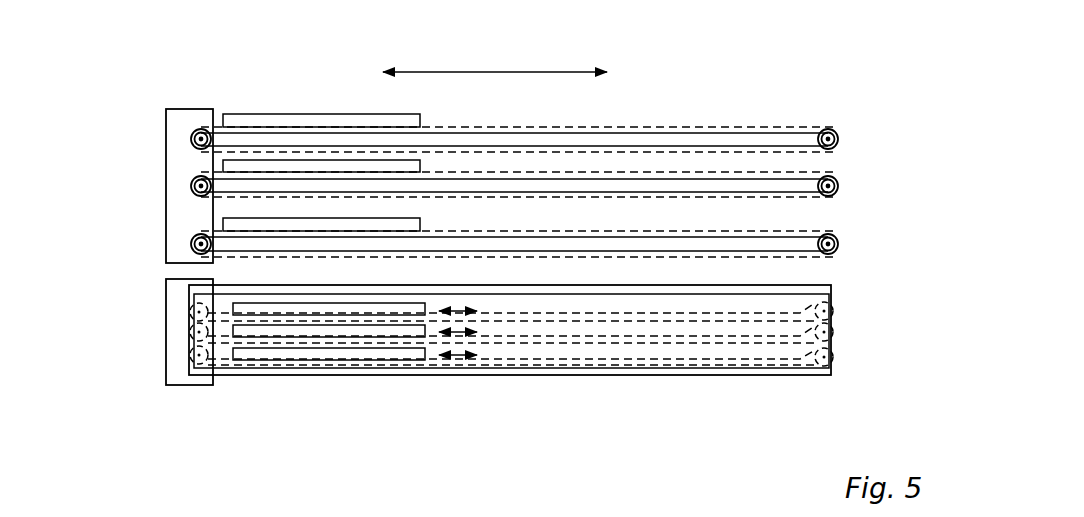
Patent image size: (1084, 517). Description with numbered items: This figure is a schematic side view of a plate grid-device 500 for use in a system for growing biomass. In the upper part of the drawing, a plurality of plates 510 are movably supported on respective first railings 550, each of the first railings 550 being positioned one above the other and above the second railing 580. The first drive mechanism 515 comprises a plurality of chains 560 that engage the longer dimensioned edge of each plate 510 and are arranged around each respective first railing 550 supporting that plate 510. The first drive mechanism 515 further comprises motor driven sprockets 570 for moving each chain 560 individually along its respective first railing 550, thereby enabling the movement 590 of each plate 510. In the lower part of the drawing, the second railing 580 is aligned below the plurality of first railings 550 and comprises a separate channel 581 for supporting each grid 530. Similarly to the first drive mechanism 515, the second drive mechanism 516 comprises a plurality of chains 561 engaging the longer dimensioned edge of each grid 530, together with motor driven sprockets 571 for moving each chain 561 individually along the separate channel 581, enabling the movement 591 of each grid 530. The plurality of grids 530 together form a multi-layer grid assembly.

The plate grid-device 500 is at (182, 83).
The plates 510 is at (303, 222).
The first drive mechanism 515 is at (165, 133).
The second drive mechanism 516 is at (163, 387).
The grids 530 is at (370, 311).
The first railings 550 is at (805, 238).
The chains 560 is at (768, 232).
The chains 561 is at (600, 322).
The motor driven sprockets 570 is at (188, 145).
The motor driven sprockets 571 is at (193, 312).
The second railing 580 is at (745, 380).
The separate channel 581 is at (784, 288).
The movement 590 is at (495, 56).
The movement 591 is at (461, 360).